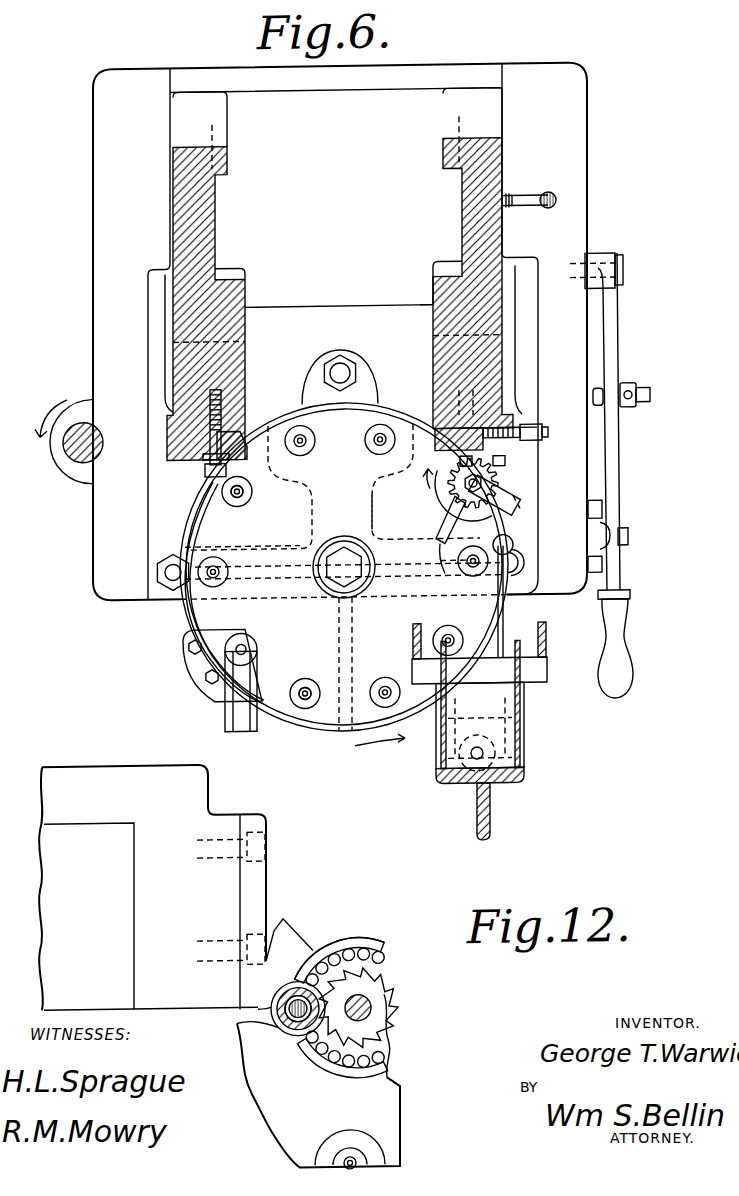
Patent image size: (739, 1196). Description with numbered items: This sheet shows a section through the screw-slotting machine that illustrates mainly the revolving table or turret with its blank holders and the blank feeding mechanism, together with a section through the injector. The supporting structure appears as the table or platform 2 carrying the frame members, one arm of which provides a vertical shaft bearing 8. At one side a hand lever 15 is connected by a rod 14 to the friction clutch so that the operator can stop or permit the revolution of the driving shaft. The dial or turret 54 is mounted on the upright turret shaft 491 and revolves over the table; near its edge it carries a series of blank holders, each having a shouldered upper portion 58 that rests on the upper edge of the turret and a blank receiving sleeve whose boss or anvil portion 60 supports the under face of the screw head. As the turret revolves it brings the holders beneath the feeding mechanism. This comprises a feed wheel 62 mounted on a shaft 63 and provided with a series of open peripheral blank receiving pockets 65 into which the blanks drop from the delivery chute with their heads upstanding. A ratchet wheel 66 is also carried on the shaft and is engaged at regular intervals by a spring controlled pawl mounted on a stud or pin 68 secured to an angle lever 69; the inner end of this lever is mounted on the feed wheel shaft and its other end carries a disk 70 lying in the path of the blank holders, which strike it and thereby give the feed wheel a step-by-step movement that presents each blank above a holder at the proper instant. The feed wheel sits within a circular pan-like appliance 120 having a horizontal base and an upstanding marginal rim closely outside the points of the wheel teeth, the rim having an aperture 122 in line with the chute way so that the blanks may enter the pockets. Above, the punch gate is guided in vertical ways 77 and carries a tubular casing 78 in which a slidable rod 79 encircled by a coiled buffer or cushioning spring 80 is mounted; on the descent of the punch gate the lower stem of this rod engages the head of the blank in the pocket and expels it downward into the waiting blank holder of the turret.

In FIG. 6, the table or platform 2 is at (563, 221).
In FIG. 6, the vertical shaft bearing 8 is at (557, 487).
In FIG. 6, the rod 14 is at (632, 395).
In FIG. 6, the hand lever 15 is at (620, 461).
In FIG. 6, the dial or turret 54 is at (344, 548).
In FIG. 6, the shouldered upper portion 58 is at (252, 493).
In FIG. 6, the boss or anvil portion 60 is at (240, 494).
In FIG. 6, the feed wheel 62 is at (445, 508).
In FIG. 12, the feed wheel 62 is at (373, 967).
In FIG. 12, the shaft 63 is at (368, 1008).
In FIG. 6, the open peripheral blank receiving pockets 65 is at (430, 566).
In FIG. 12, the open peripheral blank receiving pockets 65 is at (374, 943).
In FIG. 6, the ratchet wheel 66 is at (447, 505).
In FIG. 6, the stud or pin 68 is at (515, 472).
In FIG. 6, the angle lever 69 is at (518, 515).
In FIG. 6, the disk 70 is at (515, 548).
In FIG. 6, the vertical ways 77 is at (240, 460).
In FIG. 12, the tubular casing 78 is at (292, 1027).
In FIG. 12, the pivot bushing 79 is at (297, 1007).
In FIG. 12, the coiled buffer or cushioning spring 80 is at (278, 1000).
In FIG. 6, the circular pan-like appliance 120 is at (335, 486).
In FIG. 12, the circular pan-like appliance 120 is at (363, 935).
In FIG. 6, the aperture 122 is at (383, 515).
In FIG. 6, the center nut 491 is at (344, 566).